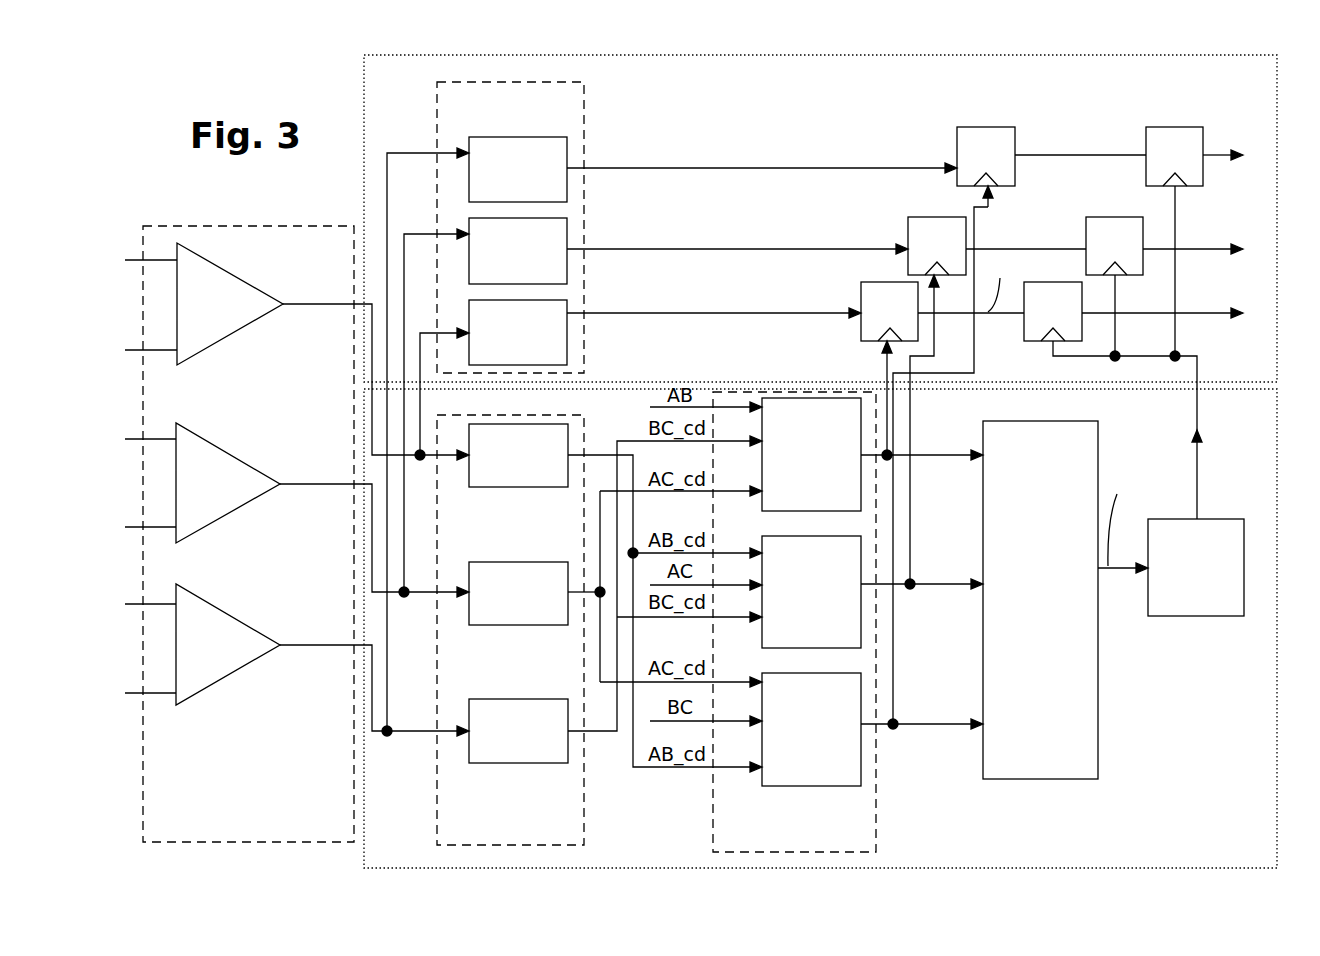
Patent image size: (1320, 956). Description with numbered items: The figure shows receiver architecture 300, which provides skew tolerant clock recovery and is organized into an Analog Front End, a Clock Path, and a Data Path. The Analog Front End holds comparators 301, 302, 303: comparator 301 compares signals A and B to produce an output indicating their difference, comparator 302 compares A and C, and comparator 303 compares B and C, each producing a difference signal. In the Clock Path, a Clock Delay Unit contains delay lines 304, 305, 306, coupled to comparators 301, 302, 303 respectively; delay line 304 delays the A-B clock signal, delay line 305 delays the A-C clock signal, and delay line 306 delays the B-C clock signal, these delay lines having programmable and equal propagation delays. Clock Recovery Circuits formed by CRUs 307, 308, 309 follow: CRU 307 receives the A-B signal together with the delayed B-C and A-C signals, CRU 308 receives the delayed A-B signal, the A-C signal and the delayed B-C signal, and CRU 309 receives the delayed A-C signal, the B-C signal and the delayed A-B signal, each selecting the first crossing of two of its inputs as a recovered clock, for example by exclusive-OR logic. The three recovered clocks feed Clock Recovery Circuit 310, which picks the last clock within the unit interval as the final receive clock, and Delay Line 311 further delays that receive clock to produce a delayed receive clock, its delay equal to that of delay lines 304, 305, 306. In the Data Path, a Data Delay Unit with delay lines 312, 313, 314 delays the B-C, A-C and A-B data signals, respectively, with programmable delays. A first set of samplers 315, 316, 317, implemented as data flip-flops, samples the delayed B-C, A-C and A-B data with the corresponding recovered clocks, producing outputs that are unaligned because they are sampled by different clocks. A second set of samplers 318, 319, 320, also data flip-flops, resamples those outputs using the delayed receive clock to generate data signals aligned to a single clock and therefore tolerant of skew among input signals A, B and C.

The receiver architecture 300 is at (242, 96).
The comparator 301 is at (199, 315).
The comparator 302 is at (198, 494).
The comparator 303 is at (198, 655).
The delay line 304 is at (500, 466).
The delay line 305 is at (500, 604).
The delay line 306 is at (500, 742).
The CRU 307 is at (793, 465).
The CRU 308 is at (793, 602).
The CRU 309 is at (793, 742).
The Clock Recovery Circuit 310 is at (1024, 557).
The Delay Line 311 is at (1178, 549).
The delay line 312 is at (500, 180).
The delay line 313 is at (500, 262).
The delay line 314 is at (500, 344).
The sampler 315 is at (972, 144).
The sampler 316 is at (923, 234).
The sampler 317 is at (876, 299).
The sampler 318 is at (1161, 144).
The sampler 319 is at (1101, 234).
The sampler 320 is at (1039, 299).